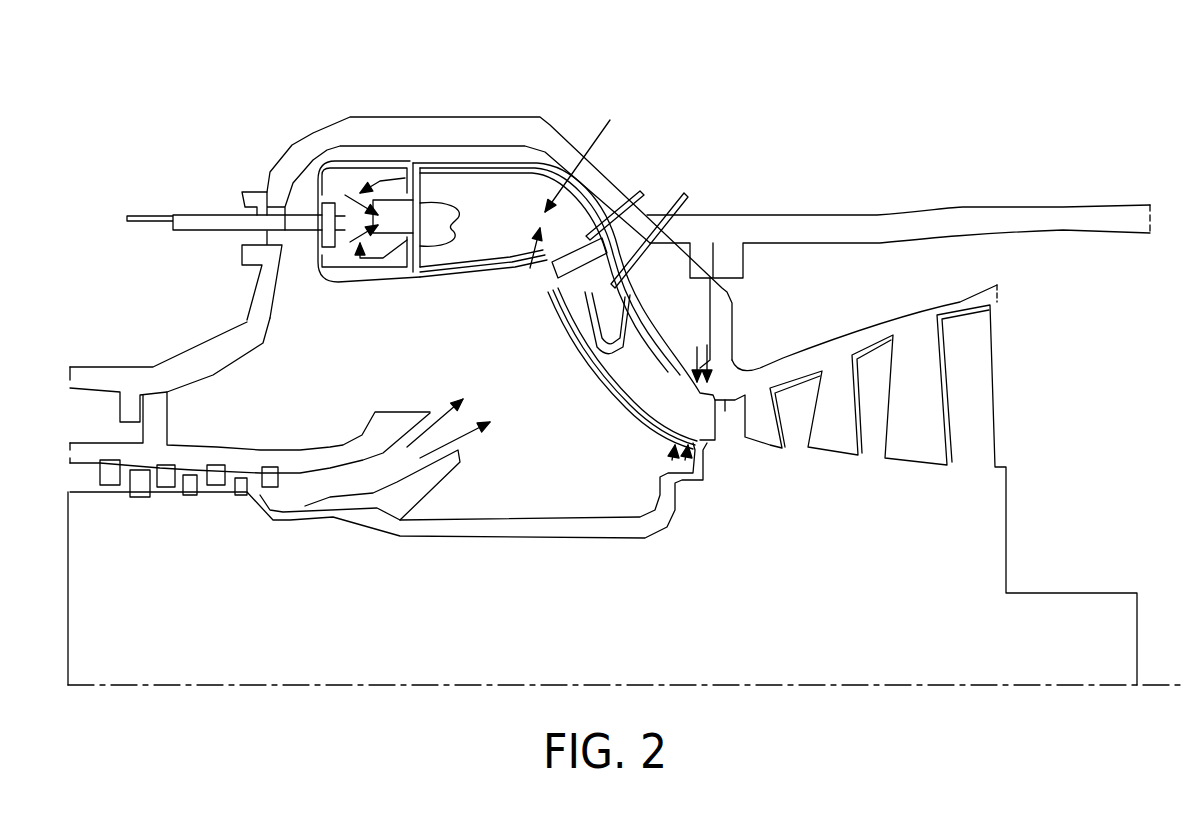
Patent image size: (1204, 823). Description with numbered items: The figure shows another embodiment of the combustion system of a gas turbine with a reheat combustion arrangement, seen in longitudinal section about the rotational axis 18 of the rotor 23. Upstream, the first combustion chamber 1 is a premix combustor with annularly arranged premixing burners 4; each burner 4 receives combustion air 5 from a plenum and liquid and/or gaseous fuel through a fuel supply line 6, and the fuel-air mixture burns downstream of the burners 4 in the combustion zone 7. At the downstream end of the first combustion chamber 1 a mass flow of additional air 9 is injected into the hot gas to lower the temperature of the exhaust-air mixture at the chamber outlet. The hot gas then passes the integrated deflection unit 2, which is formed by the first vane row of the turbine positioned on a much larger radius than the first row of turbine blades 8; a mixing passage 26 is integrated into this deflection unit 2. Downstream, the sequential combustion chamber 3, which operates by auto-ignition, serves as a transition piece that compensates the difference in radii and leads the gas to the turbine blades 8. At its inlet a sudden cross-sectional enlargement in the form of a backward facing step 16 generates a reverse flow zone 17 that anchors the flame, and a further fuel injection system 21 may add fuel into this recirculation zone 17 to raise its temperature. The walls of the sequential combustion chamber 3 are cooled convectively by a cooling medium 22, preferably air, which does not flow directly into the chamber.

The first combustion chamber 1 is at (490, 197).
The integrated deflection unit 2 is at (560, 285).
The sequential combustion chamber 3 is at (598, 373).
The premixing burner 4 is at (390, 210).
The combustion air 5 is at (385, 203).
The fuel supply line 6 is at (138, 216).
The combustion zone 7 is at (447, 187).
The first row of turbine blades 8 is at (728, 398).
The additional air 9 is at (592, 142).
The backward facing step 16 is at (626, 350).
The reverse flow zone 17 is at (615, 300).
The rotational axis 18 is at (1153, 685).
The additional fuel injection system 21 is at (686, 194).
The cooling medium 22 is at (683, 450).
The rotor 23 is at (982, 535).
The mixing passage 26 is at (642, 193).